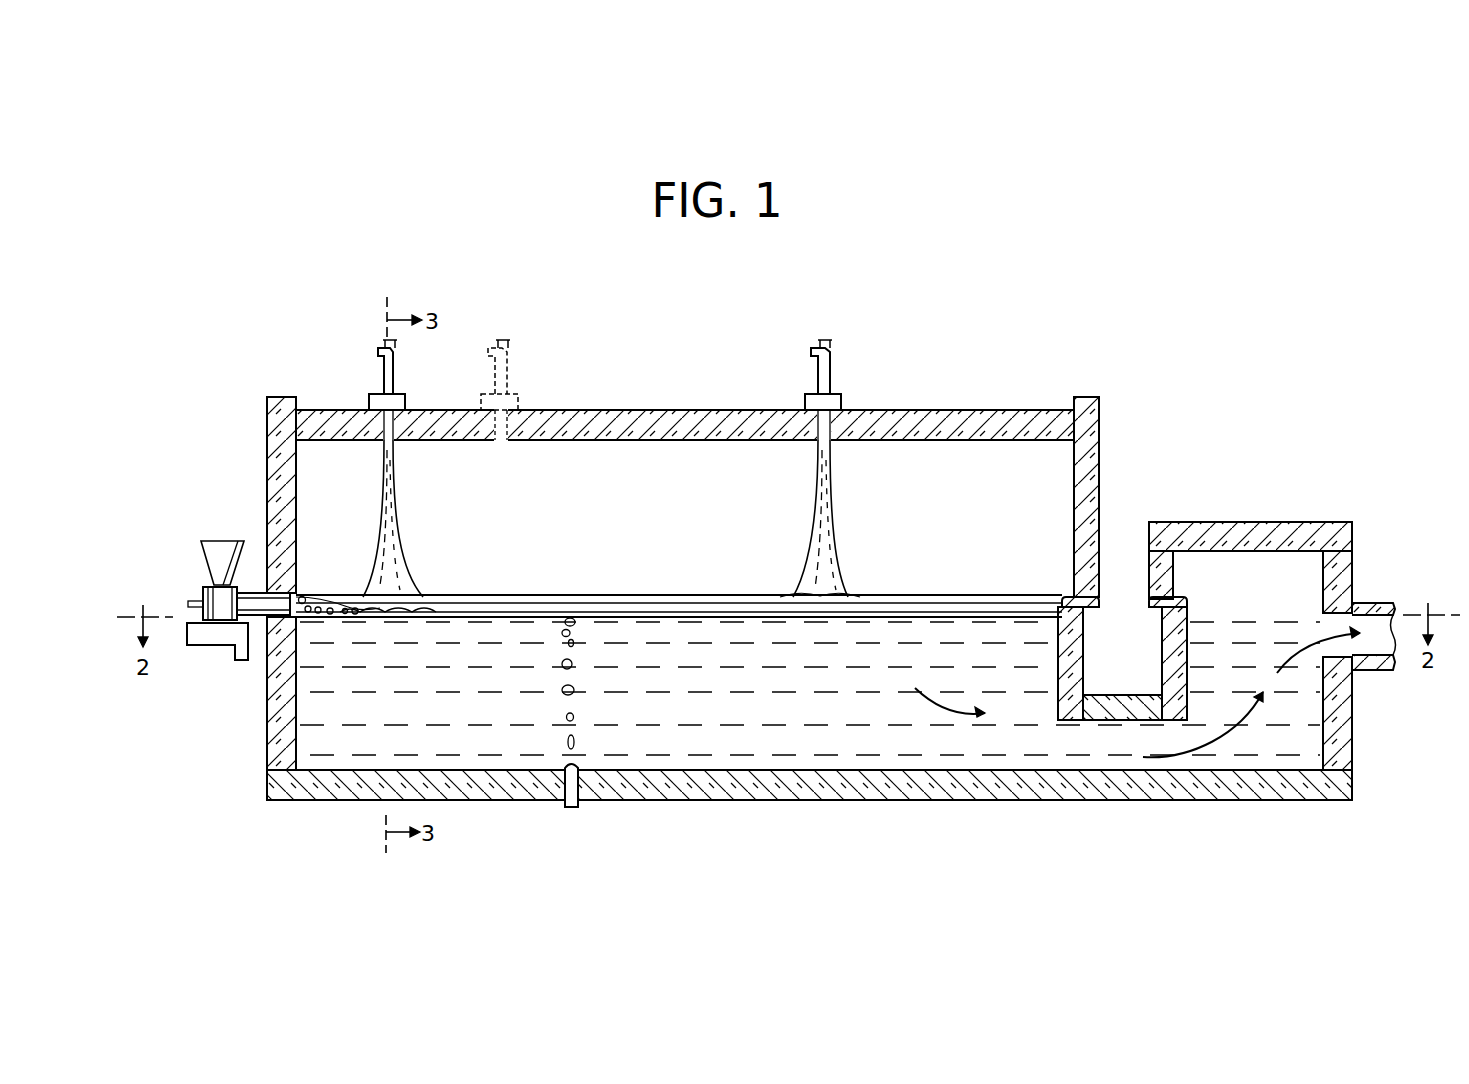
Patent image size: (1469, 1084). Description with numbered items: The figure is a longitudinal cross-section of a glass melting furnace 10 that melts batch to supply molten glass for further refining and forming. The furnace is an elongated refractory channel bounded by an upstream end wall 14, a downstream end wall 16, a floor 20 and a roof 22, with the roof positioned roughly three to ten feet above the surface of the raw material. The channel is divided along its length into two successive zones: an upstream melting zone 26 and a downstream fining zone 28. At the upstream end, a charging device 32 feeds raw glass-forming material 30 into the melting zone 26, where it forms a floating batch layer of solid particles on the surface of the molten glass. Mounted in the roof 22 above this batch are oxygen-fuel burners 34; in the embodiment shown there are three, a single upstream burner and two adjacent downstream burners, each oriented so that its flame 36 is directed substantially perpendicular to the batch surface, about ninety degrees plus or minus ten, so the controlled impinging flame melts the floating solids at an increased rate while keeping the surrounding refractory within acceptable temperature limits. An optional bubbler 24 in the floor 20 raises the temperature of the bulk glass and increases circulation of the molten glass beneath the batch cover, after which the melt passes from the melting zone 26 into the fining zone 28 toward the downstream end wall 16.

The glass melting furnace 10 is at (1107, 362).
The upstream end wall 14 is at (267, 478).
The downstream end wall 16 is at (1100, 472).
The floor 20 is at (940, 800).
The roof 22 is at (651, 410).
The bubbler 24 is at (580, 807).
The melting zone 26 is at (443, 569).
The fining zone 28 is at (1005, 569).
The raw glass-forming material 30 is at (330, 595).
The charging device 32 is at (216, 633).
The oxygen-fuel burner 34 is at (378, 365).
The flame 36 is at (397, 478).